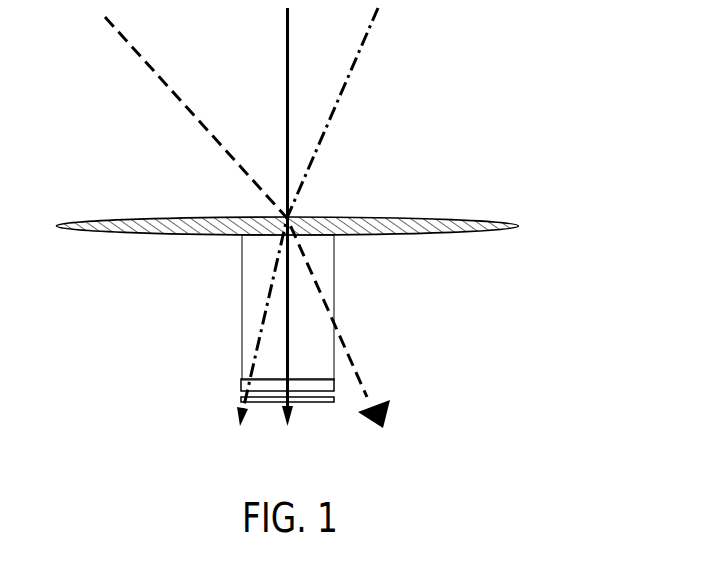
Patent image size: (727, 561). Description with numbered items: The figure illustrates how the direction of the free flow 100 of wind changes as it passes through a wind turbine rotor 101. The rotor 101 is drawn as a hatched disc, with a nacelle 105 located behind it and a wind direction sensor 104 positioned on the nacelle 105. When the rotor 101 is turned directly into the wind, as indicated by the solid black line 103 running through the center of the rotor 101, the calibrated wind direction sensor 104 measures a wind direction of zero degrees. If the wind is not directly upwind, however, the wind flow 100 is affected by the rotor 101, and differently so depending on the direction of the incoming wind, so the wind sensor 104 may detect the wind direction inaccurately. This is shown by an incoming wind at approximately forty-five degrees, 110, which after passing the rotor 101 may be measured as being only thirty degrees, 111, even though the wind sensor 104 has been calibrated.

The free flow 100 is at (288, 77).
The wind turbine rotor 101 is at (457, 219).
The solid black line 103 is at (287, 38).
The wind direction sensor 104 is at (316, 385).
The nacelle 105 is at (334, 270).
The incoming wind at approximately 45 degrees 110 is at (157, 70).
The measured wind direction of 30 degrees 111 is at (353, 363).